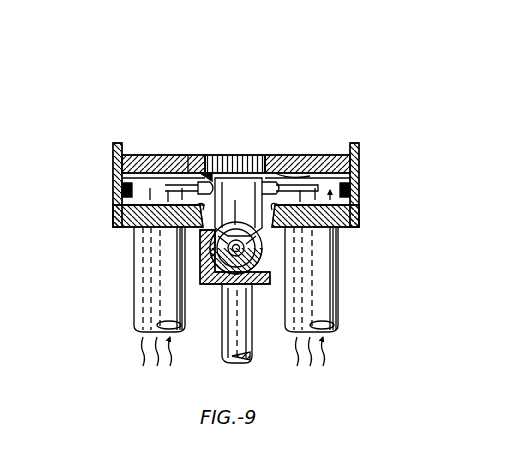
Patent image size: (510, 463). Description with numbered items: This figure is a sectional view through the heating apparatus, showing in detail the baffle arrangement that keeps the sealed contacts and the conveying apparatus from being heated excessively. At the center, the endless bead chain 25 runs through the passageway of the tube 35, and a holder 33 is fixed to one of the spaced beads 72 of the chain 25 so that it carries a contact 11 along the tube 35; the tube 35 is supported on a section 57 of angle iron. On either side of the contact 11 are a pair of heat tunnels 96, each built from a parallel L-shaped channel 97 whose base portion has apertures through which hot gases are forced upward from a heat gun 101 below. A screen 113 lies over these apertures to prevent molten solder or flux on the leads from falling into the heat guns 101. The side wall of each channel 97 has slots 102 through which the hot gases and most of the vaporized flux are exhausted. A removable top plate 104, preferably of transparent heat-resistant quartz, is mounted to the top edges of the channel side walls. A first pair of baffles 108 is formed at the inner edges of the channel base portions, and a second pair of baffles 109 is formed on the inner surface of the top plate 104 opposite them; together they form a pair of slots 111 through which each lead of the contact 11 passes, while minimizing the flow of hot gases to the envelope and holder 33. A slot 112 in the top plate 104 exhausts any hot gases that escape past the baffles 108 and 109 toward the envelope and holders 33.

The contact 11 is at (266, 182).
The endless bead chain 25 is at (244, 248).
The holder 33 is at (243, 178).
The tube 35 is at (262, 256).
The section of angle iron 57 is at (260, 285).
The bead 72 is at (232, 248).
The heat tunnel 96 is at (122, 213).
The L-shaped channel 97 is at (113, 158).
The heat gun 101 is at (147, 316).
The slot 102 is at (122, 190).
The top plate 104 is at (176, 153).
The first pair of baffles 108 is at (214, 243).
The second pair of baffles 109 is at (313, 153).
The slot 111 is at (183, 153).
The slot 112 is at (224, 153).
The screen 113 is at (322, 200).